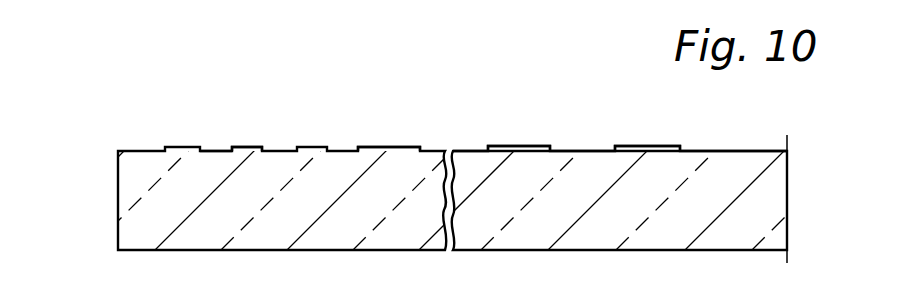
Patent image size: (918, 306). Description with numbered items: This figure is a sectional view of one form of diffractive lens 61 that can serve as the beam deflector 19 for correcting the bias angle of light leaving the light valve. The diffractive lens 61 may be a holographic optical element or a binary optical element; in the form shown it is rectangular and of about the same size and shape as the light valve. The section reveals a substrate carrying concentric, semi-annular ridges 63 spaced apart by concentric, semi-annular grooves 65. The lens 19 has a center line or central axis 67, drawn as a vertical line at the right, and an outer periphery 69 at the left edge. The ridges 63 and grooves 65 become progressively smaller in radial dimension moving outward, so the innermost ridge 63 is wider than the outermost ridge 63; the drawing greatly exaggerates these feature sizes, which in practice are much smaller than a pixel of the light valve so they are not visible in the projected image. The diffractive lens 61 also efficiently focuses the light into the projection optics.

The beam deflector 19 is at (605, 101).
The diffractive lens 61 is at (406, 149).
The ridges 63 is at (300, 148).
The grooves 65 is at (213, 150).
The central axis 67 is at (787, 173).
The outer periphery 69 is at (117, 197).